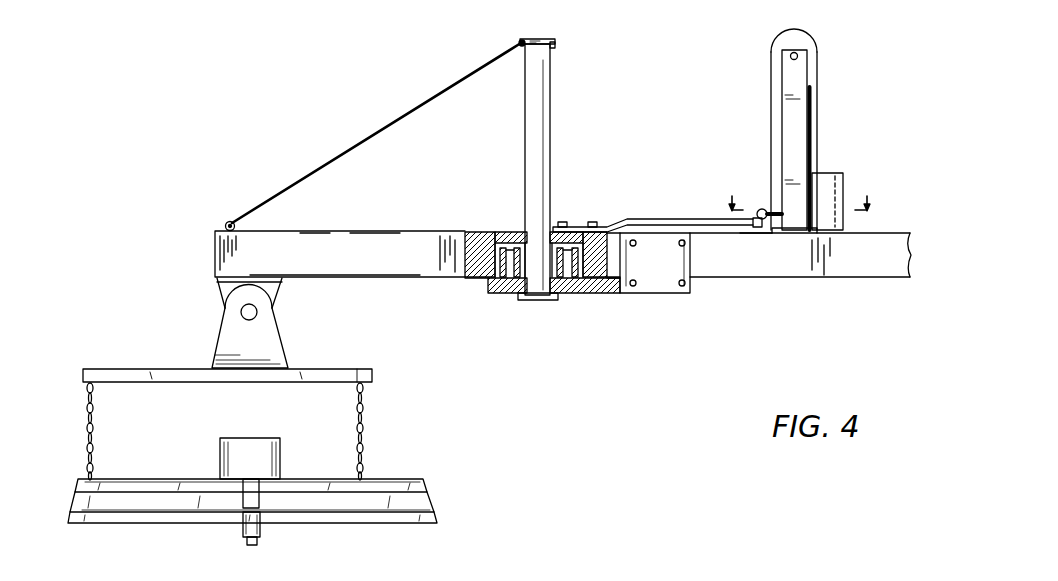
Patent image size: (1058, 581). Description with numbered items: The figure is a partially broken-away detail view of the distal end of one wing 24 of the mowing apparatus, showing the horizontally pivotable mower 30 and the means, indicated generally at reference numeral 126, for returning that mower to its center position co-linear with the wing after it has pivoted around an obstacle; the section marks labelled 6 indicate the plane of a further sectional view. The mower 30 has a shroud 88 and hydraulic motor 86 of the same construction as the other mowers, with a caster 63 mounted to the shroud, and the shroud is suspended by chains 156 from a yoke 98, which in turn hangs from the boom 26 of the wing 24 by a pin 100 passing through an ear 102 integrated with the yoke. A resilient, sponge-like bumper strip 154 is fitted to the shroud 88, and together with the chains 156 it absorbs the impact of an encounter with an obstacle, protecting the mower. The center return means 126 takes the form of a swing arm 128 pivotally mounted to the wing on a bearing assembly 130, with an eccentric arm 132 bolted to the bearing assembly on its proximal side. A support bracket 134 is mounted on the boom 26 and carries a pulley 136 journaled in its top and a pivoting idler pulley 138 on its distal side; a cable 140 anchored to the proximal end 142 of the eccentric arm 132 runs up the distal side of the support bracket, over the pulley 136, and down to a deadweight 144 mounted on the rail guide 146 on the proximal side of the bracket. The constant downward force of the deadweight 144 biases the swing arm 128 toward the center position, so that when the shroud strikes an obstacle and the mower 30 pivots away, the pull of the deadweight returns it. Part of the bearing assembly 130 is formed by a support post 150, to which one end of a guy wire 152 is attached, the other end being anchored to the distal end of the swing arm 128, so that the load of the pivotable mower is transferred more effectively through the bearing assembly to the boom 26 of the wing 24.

The wing 24 is at (857, 293).
The boom 26 is at (713, 278).
The horizontally pivotable mower 30 is at (463, 382).
The caster 63 is at (252, 547).
The hydraulic motor 86 is at (250, 443).
The shroud 88 is at (407, 480).
The yoke 98 is at (360, 368).
The pin 100 is at (240, 312).
The ear 102 is at (268, 342).
The center return means 126 is at (693, 59).
The swing arm 128 is at (387, 230).
The bearing assembly 130 is at (487, 285).
The eccentric arm 132 is at (665, 217).
The support bracket 134 is at (790, 113).
The pulley 136 is at (816, 43).
The pivoting idler pulley 138 is at (760, 209).
The cable 140 is at (817, 78).
The proximal end 142 is at (747, 237).
The deadweight 144 is at (834, 177).
The rail guide 146 is at (812, 122).
The support post 150 is at (540, 120).
The guy wire 152 is at (397, 120).
The bumper strip 154 is at (168, 505).
The chains 156 is at (363, 418).
The section line 6- 6 is at (796, 191).